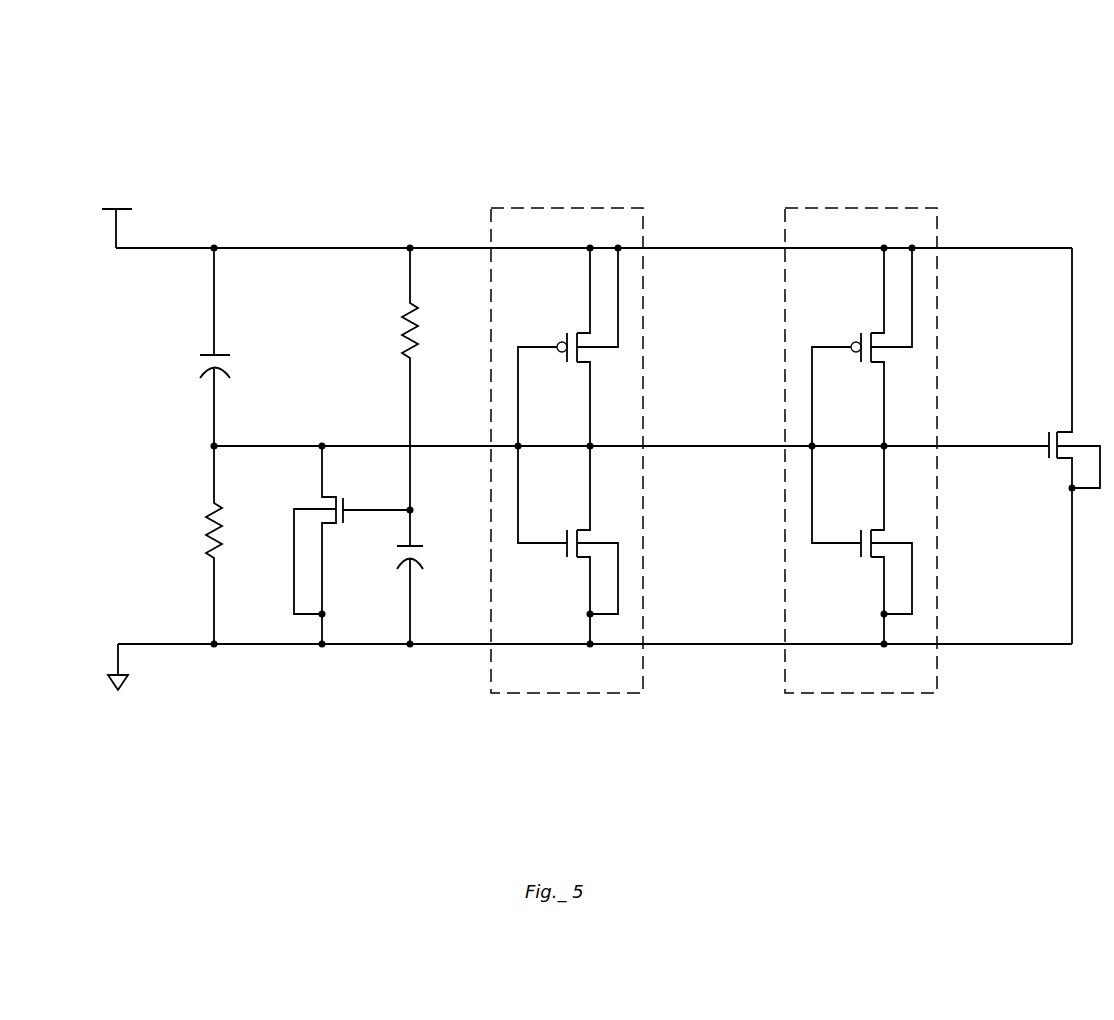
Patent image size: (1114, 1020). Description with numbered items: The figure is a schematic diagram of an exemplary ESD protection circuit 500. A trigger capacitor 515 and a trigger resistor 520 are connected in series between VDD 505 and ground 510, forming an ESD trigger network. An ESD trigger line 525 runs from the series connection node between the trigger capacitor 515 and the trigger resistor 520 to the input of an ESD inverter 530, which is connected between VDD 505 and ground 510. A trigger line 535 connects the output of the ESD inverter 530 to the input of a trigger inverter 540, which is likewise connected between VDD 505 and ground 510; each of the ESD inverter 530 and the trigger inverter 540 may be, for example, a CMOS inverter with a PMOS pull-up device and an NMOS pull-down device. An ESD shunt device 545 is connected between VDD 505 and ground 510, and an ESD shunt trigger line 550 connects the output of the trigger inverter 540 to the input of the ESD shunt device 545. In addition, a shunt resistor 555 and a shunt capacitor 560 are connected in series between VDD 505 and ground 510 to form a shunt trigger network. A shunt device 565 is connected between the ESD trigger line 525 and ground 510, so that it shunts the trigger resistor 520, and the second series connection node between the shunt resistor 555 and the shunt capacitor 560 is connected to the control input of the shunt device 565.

The ESD protection circuit 500 is at (781, 84).
The VDD 505 is at (118, 207).
The ground 510 is at (117, 667).
The trigger capacitor 515 is at (232, 367).
The trigger resistor 520 is at (226, 530).
The ESD trigger line 525 is at (362, 444).
The ESD inverter 530 is at (618, 207).
The trigger line 535 is at (712, 444).
The trigger inverter 540 is at (913, 207).
The ESD shunt device 545 is at (1048, 456).
The ESD shunt trigger line 550 is at (1006, 445).
The shunt resistor 555 is at (419, 331).
The shunt capacitor 560 is at (425, 563).
The shunt device 565 is at (334, 496).